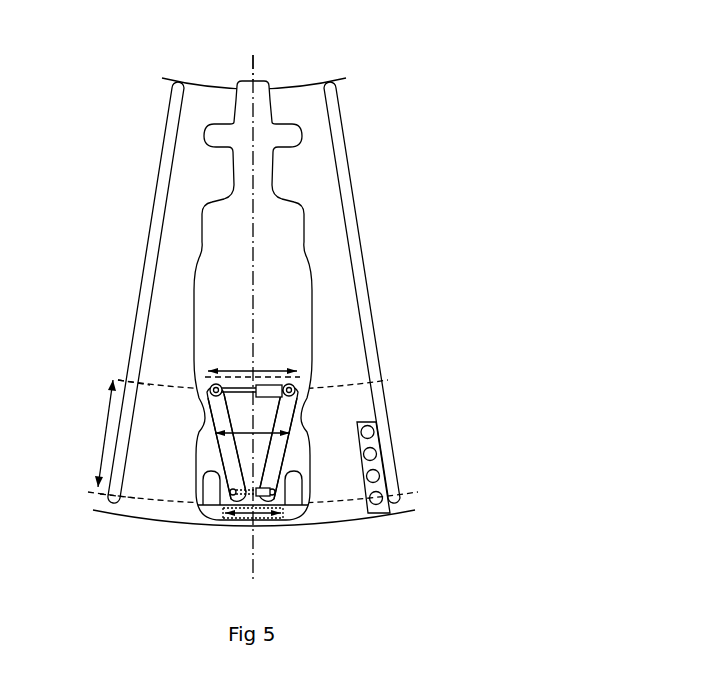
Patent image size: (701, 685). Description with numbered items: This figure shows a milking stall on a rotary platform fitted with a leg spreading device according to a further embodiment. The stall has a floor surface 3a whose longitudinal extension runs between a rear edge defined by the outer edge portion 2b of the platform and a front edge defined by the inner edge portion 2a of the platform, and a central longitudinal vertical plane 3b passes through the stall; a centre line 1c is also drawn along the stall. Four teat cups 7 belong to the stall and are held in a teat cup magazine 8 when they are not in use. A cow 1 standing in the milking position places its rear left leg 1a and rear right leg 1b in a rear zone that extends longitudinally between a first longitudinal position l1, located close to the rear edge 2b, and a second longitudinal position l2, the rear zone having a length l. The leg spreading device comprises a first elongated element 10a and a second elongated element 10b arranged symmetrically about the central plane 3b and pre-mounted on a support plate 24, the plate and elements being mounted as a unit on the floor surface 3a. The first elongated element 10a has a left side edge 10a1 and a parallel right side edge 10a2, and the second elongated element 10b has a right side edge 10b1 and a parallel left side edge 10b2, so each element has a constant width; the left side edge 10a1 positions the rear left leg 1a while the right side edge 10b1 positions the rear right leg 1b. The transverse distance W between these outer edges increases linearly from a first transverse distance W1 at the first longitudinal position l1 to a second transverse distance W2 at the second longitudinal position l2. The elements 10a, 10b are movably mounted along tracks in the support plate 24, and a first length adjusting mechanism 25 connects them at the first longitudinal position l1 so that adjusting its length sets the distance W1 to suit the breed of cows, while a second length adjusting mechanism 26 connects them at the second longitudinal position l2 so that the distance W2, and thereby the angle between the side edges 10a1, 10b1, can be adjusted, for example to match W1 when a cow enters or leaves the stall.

The cow 1 is at (280, 255).
The rear left leg 1a is at (208, 487).
The rear right leg 1b is at (300, 485).
The root centre line 1c is at (250, 248).
The inner edge portion of the platform 2a is at (195, 82).
The outer edge portion of the platform 2b is at (147, 520).
The floor surface 3a is at (308, 171).
The central longitudinal plane 3b is at (250, 70).
The teat cup 7 is at (375, 477).
The teat cup magazine 8 is at (368, 447).
The first elongated element 10a is at (220, 413).
The left side edge of the first elongated element 10a1 is at (212, 463).
The right side edge of the first elongated element 10a2 is at (222, 441).
The second elongated element 10b is at (282, 413).
The right side edge of the second elongated element 10b1 is at (290, 458).
The left side edge of the second elongated element 10b2 is at (272, 442).
The support plate 24 is at (211, 386).
The first length adjusting mechanism 25 is at (262, 490).
The second length adjusting mechanism 26 is at (280, 386).
The transverse distance W is at (252, 424).
The first transverse distance W1 is at (245, 513).
The second transverse distance W2 is at (268, 368).
The length l is at (100, 433).
The first longitudinal position l1 is at (132, 497).
The second longitudinal position l2 is at (150, 385).